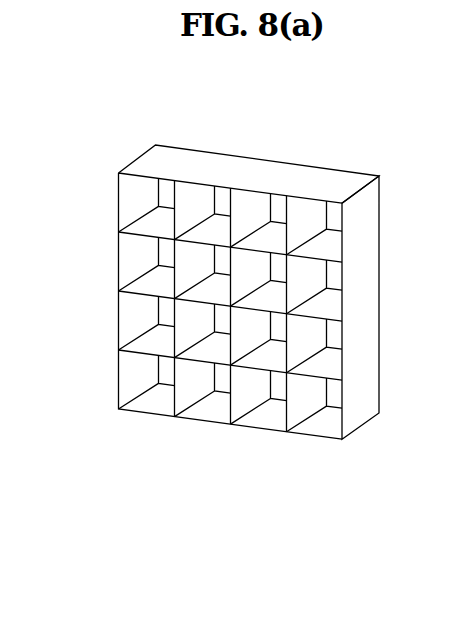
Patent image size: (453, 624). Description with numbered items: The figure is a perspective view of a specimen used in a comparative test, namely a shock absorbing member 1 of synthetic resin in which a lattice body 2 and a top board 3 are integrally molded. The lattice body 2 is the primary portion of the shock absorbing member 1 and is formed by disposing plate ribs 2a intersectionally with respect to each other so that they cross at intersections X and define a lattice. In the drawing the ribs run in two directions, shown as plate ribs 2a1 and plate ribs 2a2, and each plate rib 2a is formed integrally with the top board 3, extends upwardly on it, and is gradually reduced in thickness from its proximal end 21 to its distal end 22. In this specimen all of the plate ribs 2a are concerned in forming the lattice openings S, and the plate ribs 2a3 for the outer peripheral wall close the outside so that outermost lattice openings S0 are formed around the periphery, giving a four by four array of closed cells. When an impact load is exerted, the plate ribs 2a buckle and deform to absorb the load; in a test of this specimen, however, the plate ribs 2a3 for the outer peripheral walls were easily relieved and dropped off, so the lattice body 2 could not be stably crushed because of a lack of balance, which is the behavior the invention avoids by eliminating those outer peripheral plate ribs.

The shock absorbing member 1 is at (292, 474).
The lattice body 2 is at (236, 313).
The plate rib 2a is at (363, 290).
The plate rib 2a1 is at (155, 412).
The plate rib 2a2 is at (335, 258).
The plate rib for outer peripheral wall 2a3 is at (267, 178).
The top board 3 is at (163, 187).
The proximal end 21 is at (327, 408).
The distal end 22 is at (264, 250).
The lattice opening S is at (207, 198).
The outermost lattice opening S0 is at (138, 377).
The intersection X is at (174, 296).